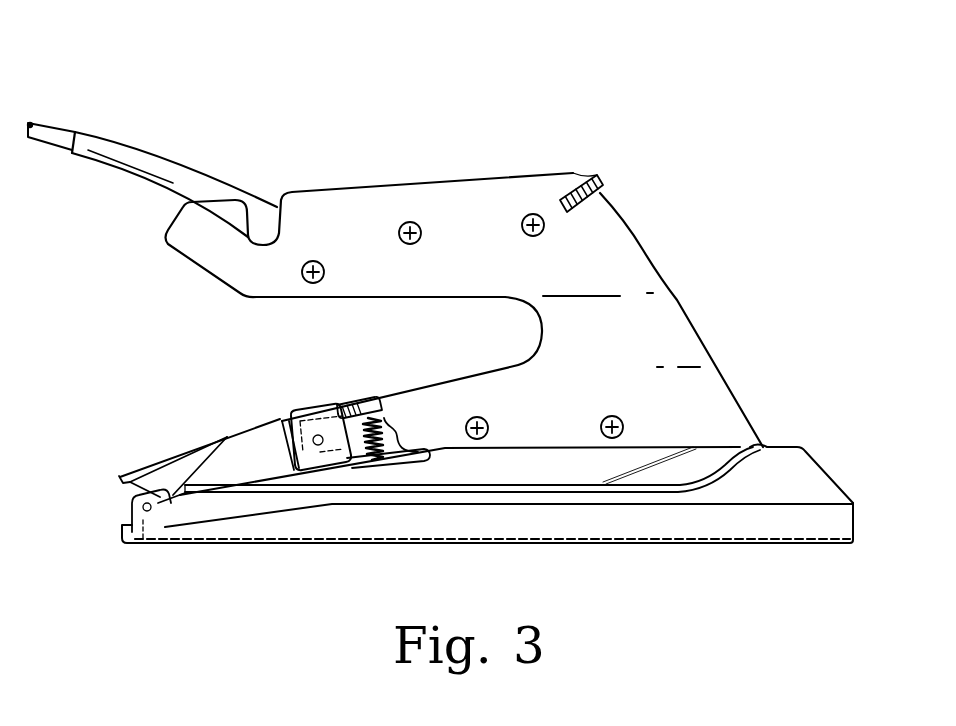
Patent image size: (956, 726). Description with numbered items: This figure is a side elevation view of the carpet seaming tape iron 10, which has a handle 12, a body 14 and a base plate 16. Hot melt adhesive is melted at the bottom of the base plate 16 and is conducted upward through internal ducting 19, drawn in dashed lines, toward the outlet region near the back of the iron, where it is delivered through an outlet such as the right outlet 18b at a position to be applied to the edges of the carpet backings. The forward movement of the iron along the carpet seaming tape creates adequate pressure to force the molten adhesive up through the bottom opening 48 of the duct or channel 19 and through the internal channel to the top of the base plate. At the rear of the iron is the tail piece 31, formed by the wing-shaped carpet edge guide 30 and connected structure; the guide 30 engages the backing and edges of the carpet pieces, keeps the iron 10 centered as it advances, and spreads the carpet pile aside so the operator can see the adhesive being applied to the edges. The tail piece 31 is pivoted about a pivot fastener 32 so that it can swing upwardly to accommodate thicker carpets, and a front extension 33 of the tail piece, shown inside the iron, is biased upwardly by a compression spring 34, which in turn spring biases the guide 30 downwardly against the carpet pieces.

The carpet seaming tape iron 10 is at (366, 73).
The handle 12 is at (445, 183).
The body 14 is at (742, 402).
The base plate 16 is at (857, 527).
The right outlet 18b is at (137, 500).
The internal ducting 19 is at (176, 523).
The carpet edge guide 30 is at (177, 462).
The tail piece 31 is at (235, 393).
The pivot fastener 32 is at (319, 434).
The front extension 33 is at (356, 408).
The compression spring 34 is at (399, 437).
The bottom opening 48 is at (158, 548).